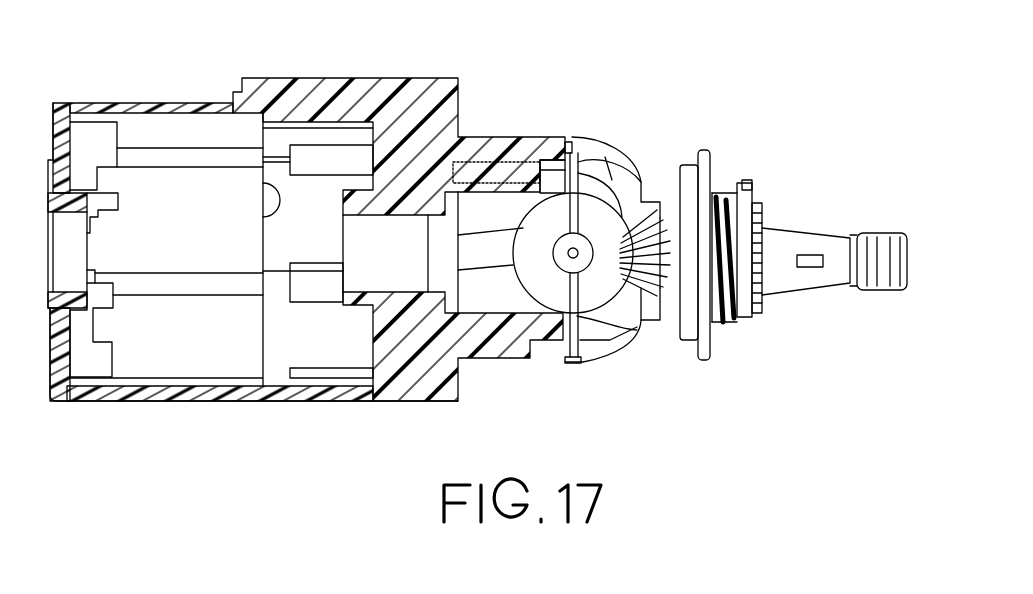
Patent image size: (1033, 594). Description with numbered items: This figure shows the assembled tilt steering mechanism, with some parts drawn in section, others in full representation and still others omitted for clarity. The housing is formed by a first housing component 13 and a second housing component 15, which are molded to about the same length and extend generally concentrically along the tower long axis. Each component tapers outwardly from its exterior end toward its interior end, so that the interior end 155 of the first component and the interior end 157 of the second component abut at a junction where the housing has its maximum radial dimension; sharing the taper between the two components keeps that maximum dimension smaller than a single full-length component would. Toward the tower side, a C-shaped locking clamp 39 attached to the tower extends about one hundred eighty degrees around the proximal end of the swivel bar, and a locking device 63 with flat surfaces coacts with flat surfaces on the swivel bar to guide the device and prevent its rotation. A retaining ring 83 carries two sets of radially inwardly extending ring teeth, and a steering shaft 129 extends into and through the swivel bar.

The second housing component 15 is at (120, 102).
The first housing component 13 is at (315, 77).
The interior end 155 is at (262, 244).
The interior end 157 is at (262, 216).
The locking clamp 39 is at (600, 352).
The locking device 63 is at (667, 327).
The retaining ring 83 is at (740, 181).
The steering shaft 129 is at (818, 295).